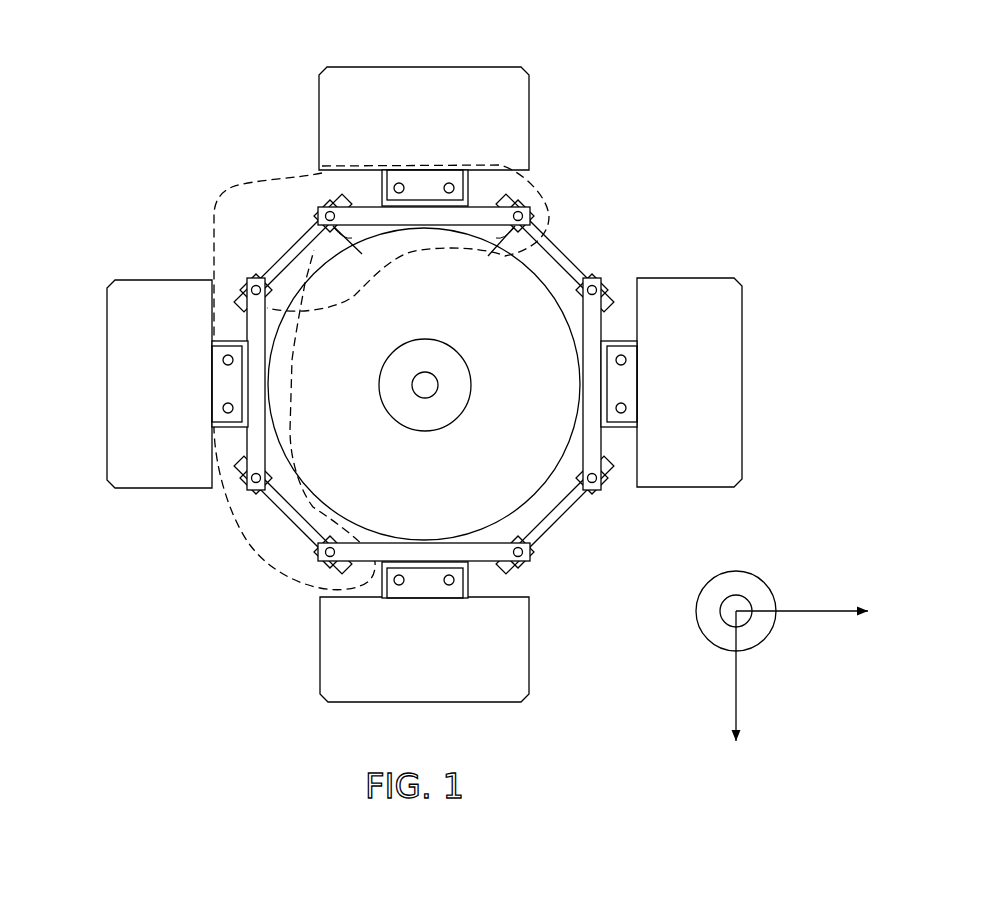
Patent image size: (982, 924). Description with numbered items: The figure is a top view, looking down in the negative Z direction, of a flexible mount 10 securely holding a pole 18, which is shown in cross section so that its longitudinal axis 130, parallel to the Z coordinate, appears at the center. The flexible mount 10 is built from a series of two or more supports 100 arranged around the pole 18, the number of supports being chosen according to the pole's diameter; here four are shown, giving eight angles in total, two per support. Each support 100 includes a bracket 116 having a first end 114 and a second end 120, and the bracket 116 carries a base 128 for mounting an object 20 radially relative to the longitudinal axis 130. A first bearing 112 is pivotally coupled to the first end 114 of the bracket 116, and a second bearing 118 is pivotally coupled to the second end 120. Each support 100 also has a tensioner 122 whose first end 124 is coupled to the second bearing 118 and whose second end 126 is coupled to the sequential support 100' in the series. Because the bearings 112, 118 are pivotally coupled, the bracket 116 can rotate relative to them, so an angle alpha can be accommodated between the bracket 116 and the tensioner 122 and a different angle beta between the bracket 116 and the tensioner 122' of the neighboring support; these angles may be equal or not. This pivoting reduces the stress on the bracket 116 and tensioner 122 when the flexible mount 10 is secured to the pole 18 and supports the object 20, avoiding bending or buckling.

The flexible mount 10 is at (127, 75).
The pole 18 is at (527, 497).
The object 20 is at (743, 390).
The support 100 is at (458, 189).
The sequential support 100' is at (271, 411).
The first bearing 112 is at (535, 217).
The first end 114 is at (530, 190).
The bracket 116 is at (427, 284).
The second bearing 118 is at (325, 216).
The second end 120 is at (332, 182).
The tensioner 122 is at (258, 200).
The tensioner 122' is at (577, 253).
The first end 124 is at (323, 193).
The second end 126 is at (225, 277).
The base 128 is at (418, 180).
The longitudinal axis 130 is at (425, 432).